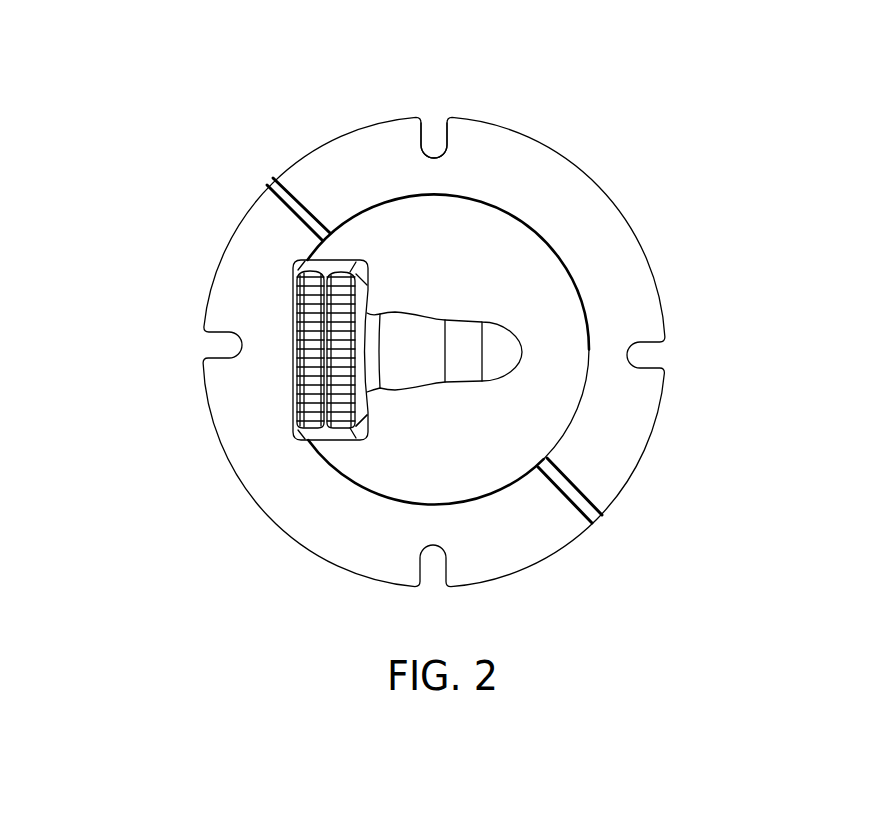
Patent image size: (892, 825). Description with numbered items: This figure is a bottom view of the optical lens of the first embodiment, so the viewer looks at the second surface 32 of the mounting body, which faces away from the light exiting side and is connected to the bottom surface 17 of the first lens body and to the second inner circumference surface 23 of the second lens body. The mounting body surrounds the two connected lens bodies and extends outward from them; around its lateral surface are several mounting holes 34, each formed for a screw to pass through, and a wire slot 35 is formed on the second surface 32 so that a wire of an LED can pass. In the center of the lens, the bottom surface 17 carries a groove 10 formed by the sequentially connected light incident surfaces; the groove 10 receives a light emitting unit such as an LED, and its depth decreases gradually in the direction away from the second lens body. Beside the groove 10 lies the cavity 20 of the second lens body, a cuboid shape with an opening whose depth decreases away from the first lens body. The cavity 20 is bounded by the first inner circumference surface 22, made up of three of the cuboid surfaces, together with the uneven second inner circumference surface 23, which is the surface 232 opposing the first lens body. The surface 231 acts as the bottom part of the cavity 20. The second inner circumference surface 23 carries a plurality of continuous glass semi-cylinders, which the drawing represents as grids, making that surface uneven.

The groove 10 is at (425, 367).
The bottom surface 17 is at (543, 410).
The cavity 20 is at (368, 426).
The first inner circumference surface 22 is at (357, 430).
The second inner circumference surface 23 is at (227, 350).
The surface 231 is at (337, 323).
The surface 232 is at (312, 365).
The second surface 32 is at (358, 142).
The mounting hole 34 is at (435, 128).
The wire slot 35 is at (270, 180).